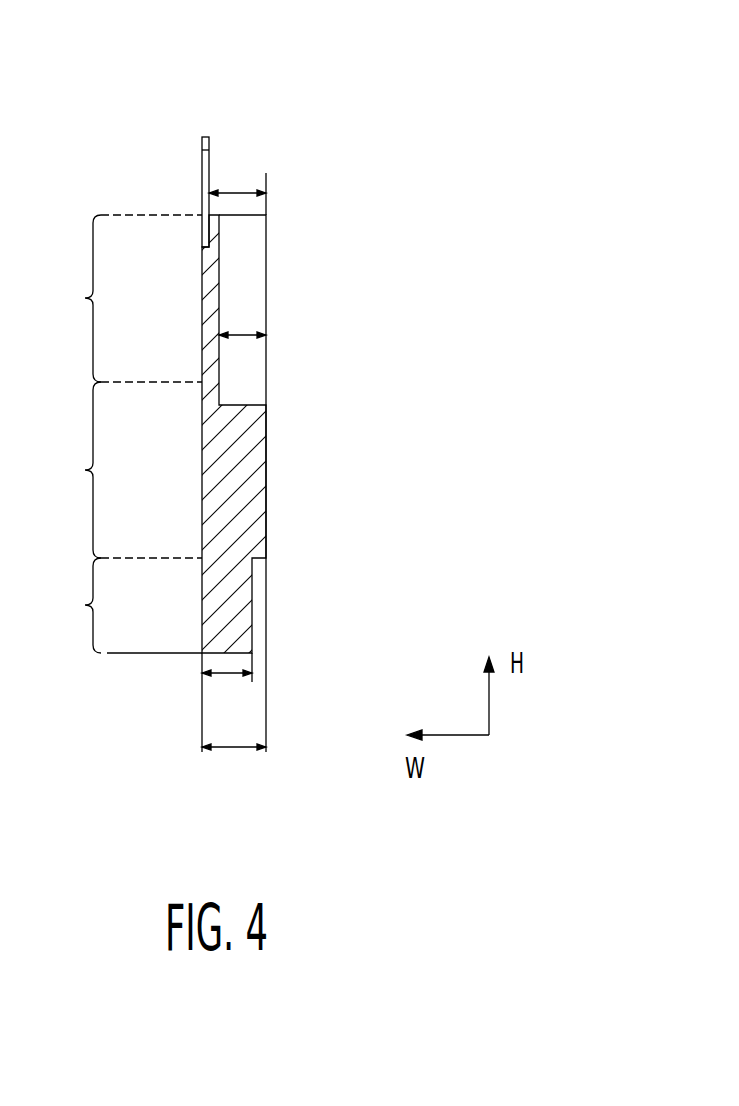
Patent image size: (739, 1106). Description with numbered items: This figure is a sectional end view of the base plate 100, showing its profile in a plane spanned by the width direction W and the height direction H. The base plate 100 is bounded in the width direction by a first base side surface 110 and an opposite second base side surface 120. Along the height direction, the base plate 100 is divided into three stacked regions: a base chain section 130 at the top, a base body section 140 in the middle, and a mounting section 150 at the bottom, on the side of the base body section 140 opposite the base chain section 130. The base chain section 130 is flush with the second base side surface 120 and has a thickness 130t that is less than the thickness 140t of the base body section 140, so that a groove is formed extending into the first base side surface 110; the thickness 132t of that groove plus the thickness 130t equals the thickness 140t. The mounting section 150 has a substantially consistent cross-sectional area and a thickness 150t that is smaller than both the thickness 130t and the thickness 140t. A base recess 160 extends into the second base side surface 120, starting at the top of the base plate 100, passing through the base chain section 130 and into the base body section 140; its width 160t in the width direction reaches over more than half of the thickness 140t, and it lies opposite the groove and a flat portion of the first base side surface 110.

The base plate 100 is at (327, 106).
The first base side surface 110 is at (202, 474).
The second base side surface 120 is at (267, 510).
The base chain section 130 is at (123, 298).
The base body section 140 is at (123, 470).
The mounting section 150 is at (123, 605).
The base recess 160 is at (252, 292).
The thickness of the base chain section 130t is at (240, 191).
The thickness of the groove 132t is at (205, 136).
The thickness of the base body section 140t is at (240, 750).
The thickness of the mounting section 150t is at (223, 676).
The width of the base recess 160t is at (248, 338).